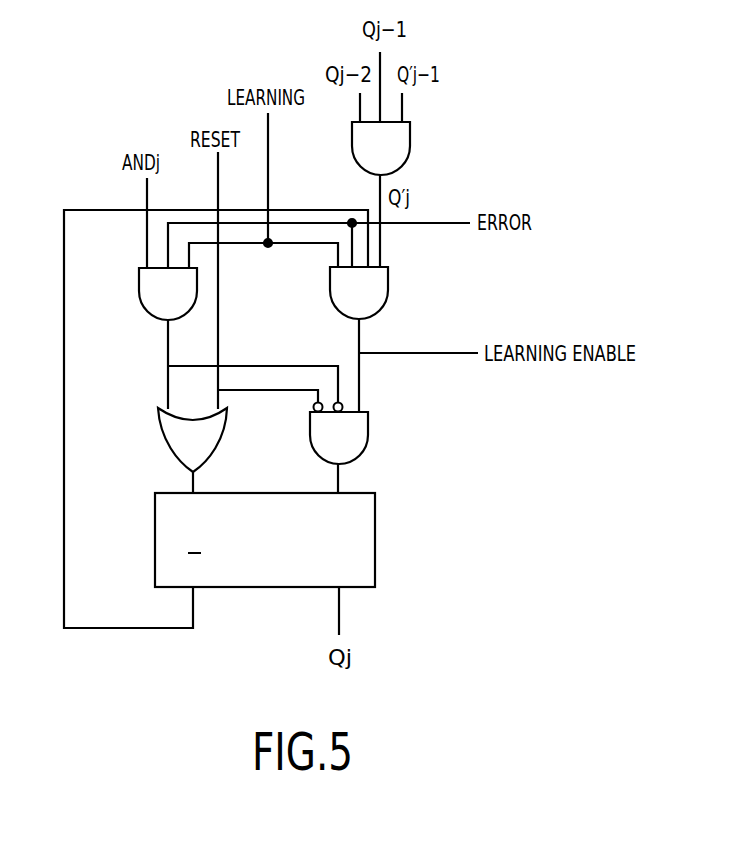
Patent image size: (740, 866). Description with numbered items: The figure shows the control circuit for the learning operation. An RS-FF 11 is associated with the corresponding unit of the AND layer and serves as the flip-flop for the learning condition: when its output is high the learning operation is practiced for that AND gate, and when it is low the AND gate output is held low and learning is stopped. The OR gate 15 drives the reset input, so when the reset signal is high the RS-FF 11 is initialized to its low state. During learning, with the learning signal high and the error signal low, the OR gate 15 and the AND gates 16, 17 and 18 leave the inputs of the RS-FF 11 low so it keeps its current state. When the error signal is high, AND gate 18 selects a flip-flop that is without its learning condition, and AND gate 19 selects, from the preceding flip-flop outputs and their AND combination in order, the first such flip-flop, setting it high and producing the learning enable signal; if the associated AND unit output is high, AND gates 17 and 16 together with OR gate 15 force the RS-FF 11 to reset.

The RS-FF 11 is at (375, 556).
The OR gate 15 is at (217, 445).
The AND gate 16 is at (360, 448).
The AND gate 17 is at (147, 304).
The AND gate 18 is at (383, 305).
The AND gate 19 is at (404, 156).